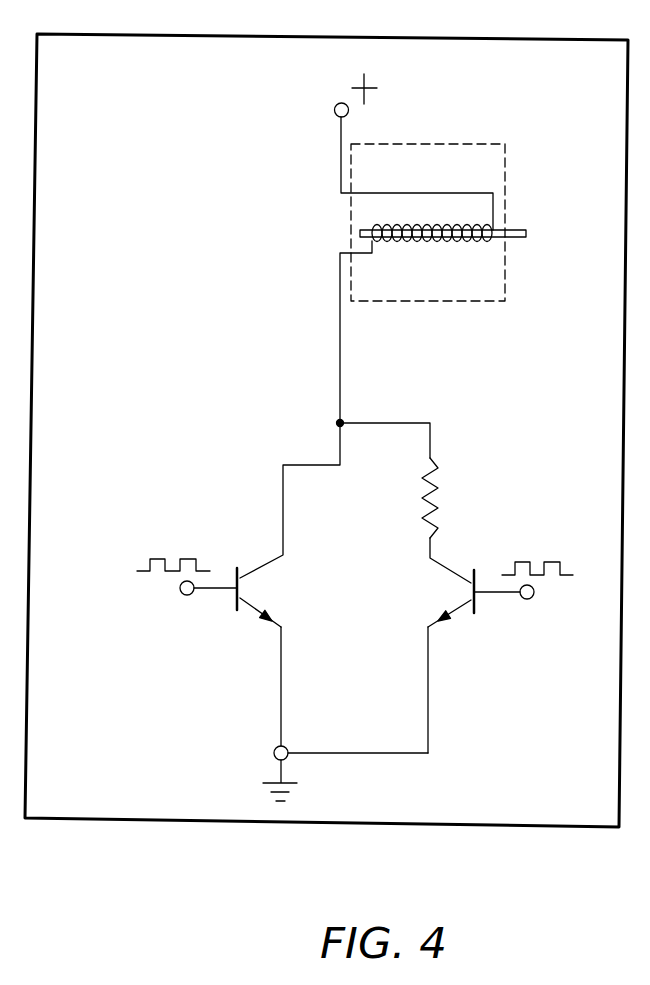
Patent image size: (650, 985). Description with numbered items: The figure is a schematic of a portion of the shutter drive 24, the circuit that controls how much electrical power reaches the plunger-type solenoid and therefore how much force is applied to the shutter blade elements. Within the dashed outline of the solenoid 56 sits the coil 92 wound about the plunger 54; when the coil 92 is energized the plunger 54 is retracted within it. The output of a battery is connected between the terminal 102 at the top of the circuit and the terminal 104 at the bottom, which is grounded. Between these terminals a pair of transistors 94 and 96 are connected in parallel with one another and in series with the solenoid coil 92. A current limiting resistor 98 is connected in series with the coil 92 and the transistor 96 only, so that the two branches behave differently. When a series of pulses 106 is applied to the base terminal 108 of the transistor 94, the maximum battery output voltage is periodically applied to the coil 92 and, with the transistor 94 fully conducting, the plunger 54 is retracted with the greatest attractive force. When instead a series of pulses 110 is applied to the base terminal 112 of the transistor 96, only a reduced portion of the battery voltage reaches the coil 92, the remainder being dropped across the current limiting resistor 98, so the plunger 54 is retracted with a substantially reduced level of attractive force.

The shutter drive 24 is at (516, 55).
The plunger 54 is at (513, 227).
The solenoid 56 is at (472, 155).
The coil 92 is at (430, 242).
The transistor 94 is at (230, 643).
The transistor 96 is at (473, 633).
The current limiting resistor 98 is at (436, 481).
The terminal 102 is at (335, 114).
The terminal 104 is at (274, 757).
The pulses 106 is at (168, 543).
The base terminal 108 is at (183, 597).
The pulses 110 is at (535, 540).
The base terminal 112 is at (532, 600).